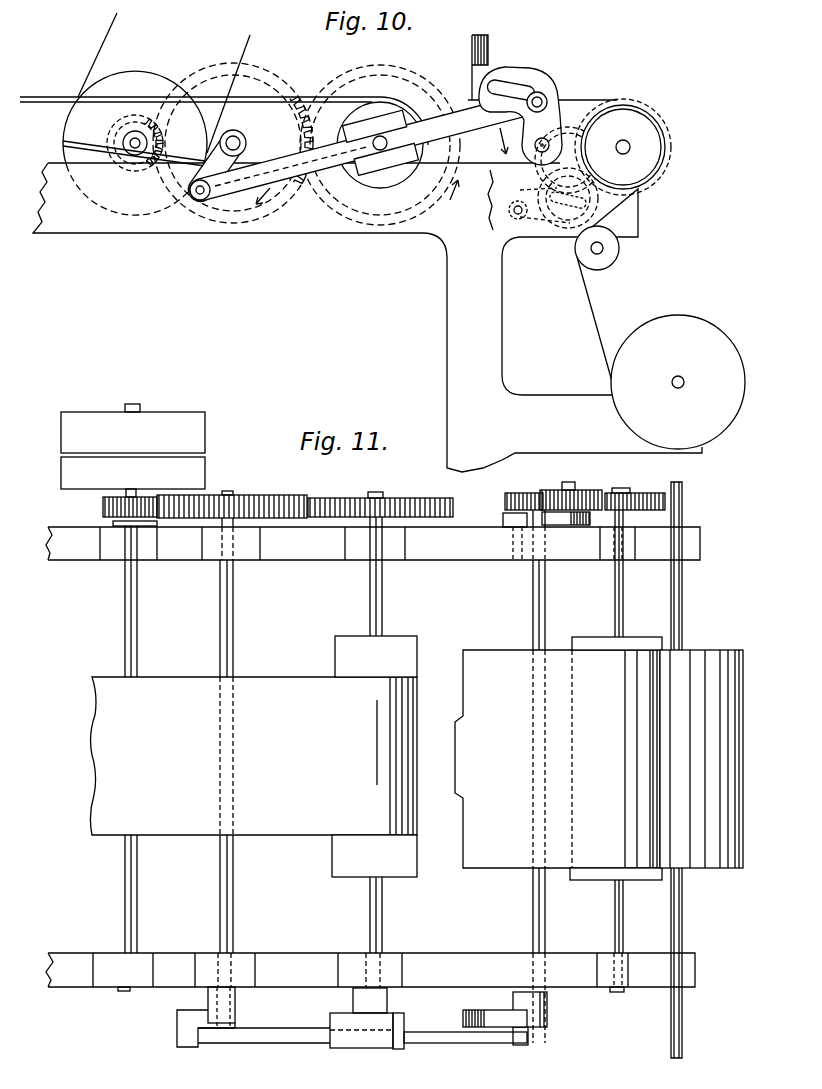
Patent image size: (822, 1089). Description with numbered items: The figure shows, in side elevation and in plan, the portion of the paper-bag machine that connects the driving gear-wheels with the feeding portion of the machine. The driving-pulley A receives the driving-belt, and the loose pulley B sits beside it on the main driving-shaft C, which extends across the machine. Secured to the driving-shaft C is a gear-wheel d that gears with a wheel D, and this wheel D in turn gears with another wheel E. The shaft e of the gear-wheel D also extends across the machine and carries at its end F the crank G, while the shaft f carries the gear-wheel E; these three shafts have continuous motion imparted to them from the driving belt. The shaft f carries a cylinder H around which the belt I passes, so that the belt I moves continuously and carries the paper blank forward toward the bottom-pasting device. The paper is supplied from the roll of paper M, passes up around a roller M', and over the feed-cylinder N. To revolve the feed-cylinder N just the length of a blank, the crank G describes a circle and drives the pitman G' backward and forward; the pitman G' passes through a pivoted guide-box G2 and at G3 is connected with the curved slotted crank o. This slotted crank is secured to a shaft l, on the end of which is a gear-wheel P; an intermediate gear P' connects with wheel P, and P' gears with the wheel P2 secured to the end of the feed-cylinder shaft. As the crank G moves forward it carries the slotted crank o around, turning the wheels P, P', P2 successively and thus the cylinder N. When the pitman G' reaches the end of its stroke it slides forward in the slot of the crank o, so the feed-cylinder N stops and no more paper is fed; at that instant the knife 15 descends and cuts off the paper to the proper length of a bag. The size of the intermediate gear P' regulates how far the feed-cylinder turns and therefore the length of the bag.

In FIG. 10, the driving-pulley A is at (135, 132).
In FIG. 11, the driving-pulley A is at (133, 428).
In FIG. 11, the loose pulley B is at (133, 473).
In FIG. 10, the main driving-shaft C is at (124, 140).
In FIG. 11, the main driving-shaft C is at (125, 605).
In FIG. 10, the gear-wheel D is at (233, 139).
In FIG. 11, the gear-wheel D is at (232, 497).
In FIG. 10, the gear-wheel E is at (380, 140).
In FIG. 11, the gear-wheel E is at (380, 499).
In FIG. 11, the end of shaft e F is at (208, 996).
In FIG. 10, the crank G is at (204, 179).
In FIG. 11, the crank G is at (233, 1007).
In FIG. 10, the pitman G' is at (368, 146).
In FIG. 11, the pitman G' is at (264, 1047).
In FIG. 10, the pivoted guide-box G2 is at (381, 141).
In FIG. 11, the pivoted guide-box G2 is at (371, 1049).
In FIG. 10, the connection of pitman to slotted crank G3 is at (543, 96).
In FIG. 11, the connection of pitman to slotted crank G3 is at (523, 1045).
In FIG. 11, the cylinder H is at (374, 756).
In FIG. 10, the belt I is at (224, 110).
In FIG. 11, the belt I is at (253, 756).
In FIG. 10, the roll of paper M is at (678, 372).
In FIG. 11, the roll of paper M is at (716, 759).
In FIG. 10, the roller M' is at (607, 248).
In FIG. 10, the feed-cylinder N is at (623, 147).
In FIG. 11, the feed-cylinder N is at (592, 873).
In FIG. 10, the gear-wheel P is at (571, 131).
In FIG. 11, the gear-wheel P is at (523, 518).
In FIG. 10, the intermediate gear P' is at (553, 217).
In FIG. 11, the intermediate gear P' is at (571, 494).
In FIG. 10, the gear-wheel P2 is at (653, 182).
In FIG. 11, the gear-wheel P2 is at (648, 492).
In FIG. 10, the gear-wheel d is at (135, 137).
In FIG. 10, the shaft e is at (239, 140).
In FIG. 11, the shaft e is at (221, 608).
In FIG. 11, the shaft f is at (370, 602).
In FIG. 11, the shaft l is at (543, 776).
In FIG. 10, the curved slotted crank o is at (534, 79).
In FIG. 11, the curved slotted crank o is at (490, 1021).
In FIG. 10, the knife 15 is at (472, 83).